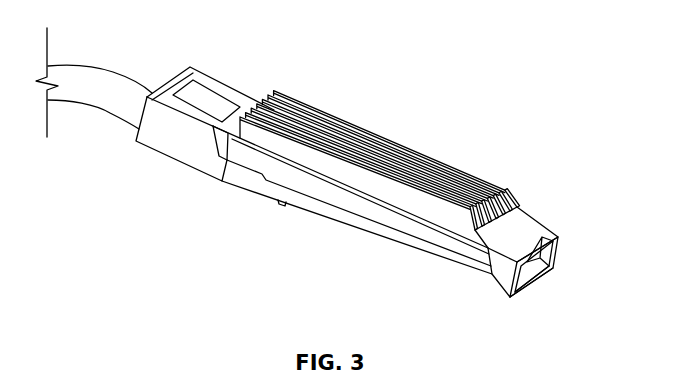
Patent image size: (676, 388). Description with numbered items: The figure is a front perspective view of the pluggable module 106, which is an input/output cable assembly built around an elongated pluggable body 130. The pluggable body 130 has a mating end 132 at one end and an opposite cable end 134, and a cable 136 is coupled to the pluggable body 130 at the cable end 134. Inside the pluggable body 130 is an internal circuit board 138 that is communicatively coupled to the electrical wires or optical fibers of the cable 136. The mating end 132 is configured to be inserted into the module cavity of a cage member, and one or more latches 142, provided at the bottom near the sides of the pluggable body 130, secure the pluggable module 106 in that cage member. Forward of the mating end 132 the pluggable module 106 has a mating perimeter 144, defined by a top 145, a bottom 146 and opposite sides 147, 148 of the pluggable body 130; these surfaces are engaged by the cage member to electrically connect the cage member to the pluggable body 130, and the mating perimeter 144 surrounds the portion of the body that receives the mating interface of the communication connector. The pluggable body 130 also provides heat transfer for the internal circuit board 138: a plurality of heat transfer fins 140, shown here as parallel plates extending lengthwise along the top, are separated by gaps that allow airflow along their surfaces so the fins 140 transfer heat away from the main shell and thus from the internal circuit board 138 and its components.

The pluggable module 106 is at (447, 129).
The pluggable body 130 is at (437, 250).
The mating end 132 is at (555, 257).
The cable end 134 is at (134, 130).
The cable 136 is at (112, 79).
The internal circuit board 138 is at (535, 266).
The heat transfer fins 140 is at (478, 183).
The latches 142 is at (282, 206).
The mating perimeter 144 is at (527, 255).
The top 145 is at (533, 238).
The bottom 146 is at (527, 288).
The side 147 is at (490, 277).
The side 148 is at (558, 245).